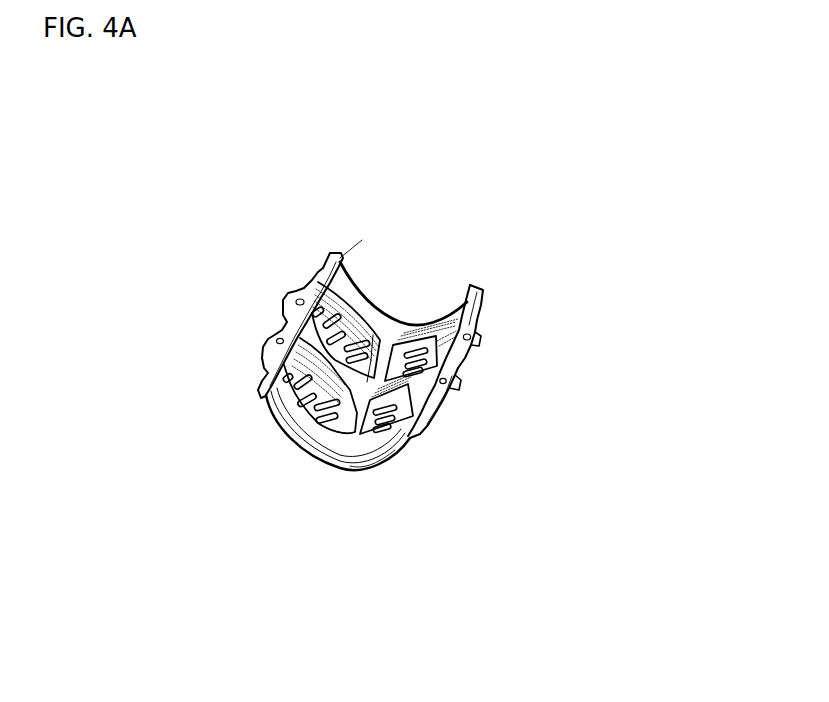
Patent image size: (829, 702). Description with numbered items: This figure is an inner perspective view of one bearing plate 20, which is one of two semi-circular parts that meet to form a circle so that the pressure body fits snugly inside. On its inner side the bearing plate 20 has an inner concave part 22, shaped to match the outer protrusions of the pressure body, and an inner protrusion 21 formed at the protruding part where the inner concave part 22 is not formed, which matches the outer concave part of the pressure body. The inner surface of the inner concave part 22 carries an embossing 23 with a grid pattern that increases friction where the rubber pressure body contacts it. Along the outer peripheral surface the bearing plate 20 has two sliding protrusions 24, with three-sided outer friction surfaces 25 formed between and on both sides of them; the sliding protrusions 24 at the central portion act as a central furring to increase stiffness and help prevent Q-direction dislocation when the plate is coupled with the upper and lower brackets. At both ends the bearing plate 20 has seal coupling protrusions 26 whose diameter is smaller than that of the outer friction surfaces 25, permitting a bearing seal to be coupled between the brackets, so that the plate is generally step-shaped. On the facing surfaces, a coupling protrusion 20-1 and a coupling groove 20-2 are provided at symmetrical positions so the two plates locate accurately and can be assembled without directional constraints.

The bearing plate 20 is at (411, 240).
The coupling protrusion 20-1 is at (483, 312).
The coupling groove 20-2 is at (437, 421).
The inner protrusion 21 is at (388, 347).
The inner concave part 22 is at (331, 425).
The embossing 23 is at (294, 405).
The sliding protrusion 24 is at (454, 401).
The outer friction surface 25 is at (305, 283).
The seal coupling protrusion 26 is at (383, 456).